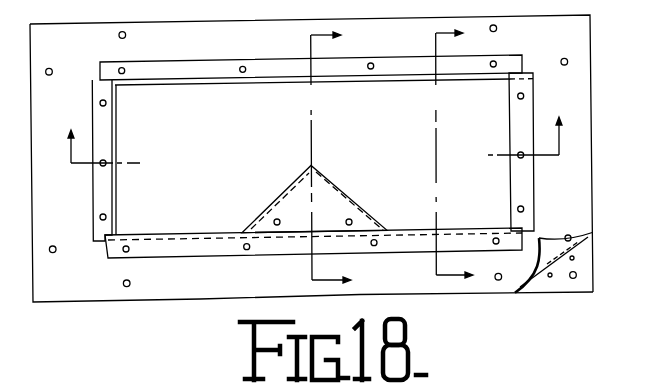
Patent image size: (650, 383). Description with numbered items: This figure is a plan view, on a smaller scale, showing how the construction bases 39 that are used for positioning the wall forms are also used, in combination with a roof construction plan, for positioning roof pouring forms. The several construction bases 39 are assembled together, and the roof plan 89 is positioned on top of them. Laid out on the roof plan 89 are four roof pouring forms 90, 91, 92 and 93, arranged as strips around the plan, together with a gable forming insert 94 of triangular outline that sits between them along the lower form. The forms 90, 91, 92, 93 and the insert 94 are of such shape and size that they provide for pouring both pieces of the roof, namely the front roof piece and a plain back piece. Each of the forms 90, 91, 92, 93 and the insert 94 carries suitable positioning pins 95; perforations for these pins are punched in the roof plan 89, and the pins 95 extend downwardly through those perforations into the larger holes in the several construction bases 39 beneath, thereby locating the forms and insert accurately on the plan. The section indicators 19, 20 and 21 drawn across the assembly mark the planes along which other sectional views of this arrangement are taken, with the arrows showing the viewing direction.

The roof plan 89 is at (580, 178).
The roof pouring form 90 is at (168, 61).
The roof pouring form 91 is at (117, 195).
The roof pouring form 92 is at (164, 238).
The roof pouring form 93 is at (534, 178).
The gable forming insert 94 is at (352, 195).
The positioning pins 95 is at (127, 69).
The construction base 39 is at (583, 267).
The section line 19 is at (454, 154).
The section line 20 is at (315, 141).
The section line 21 is at (331, 157).